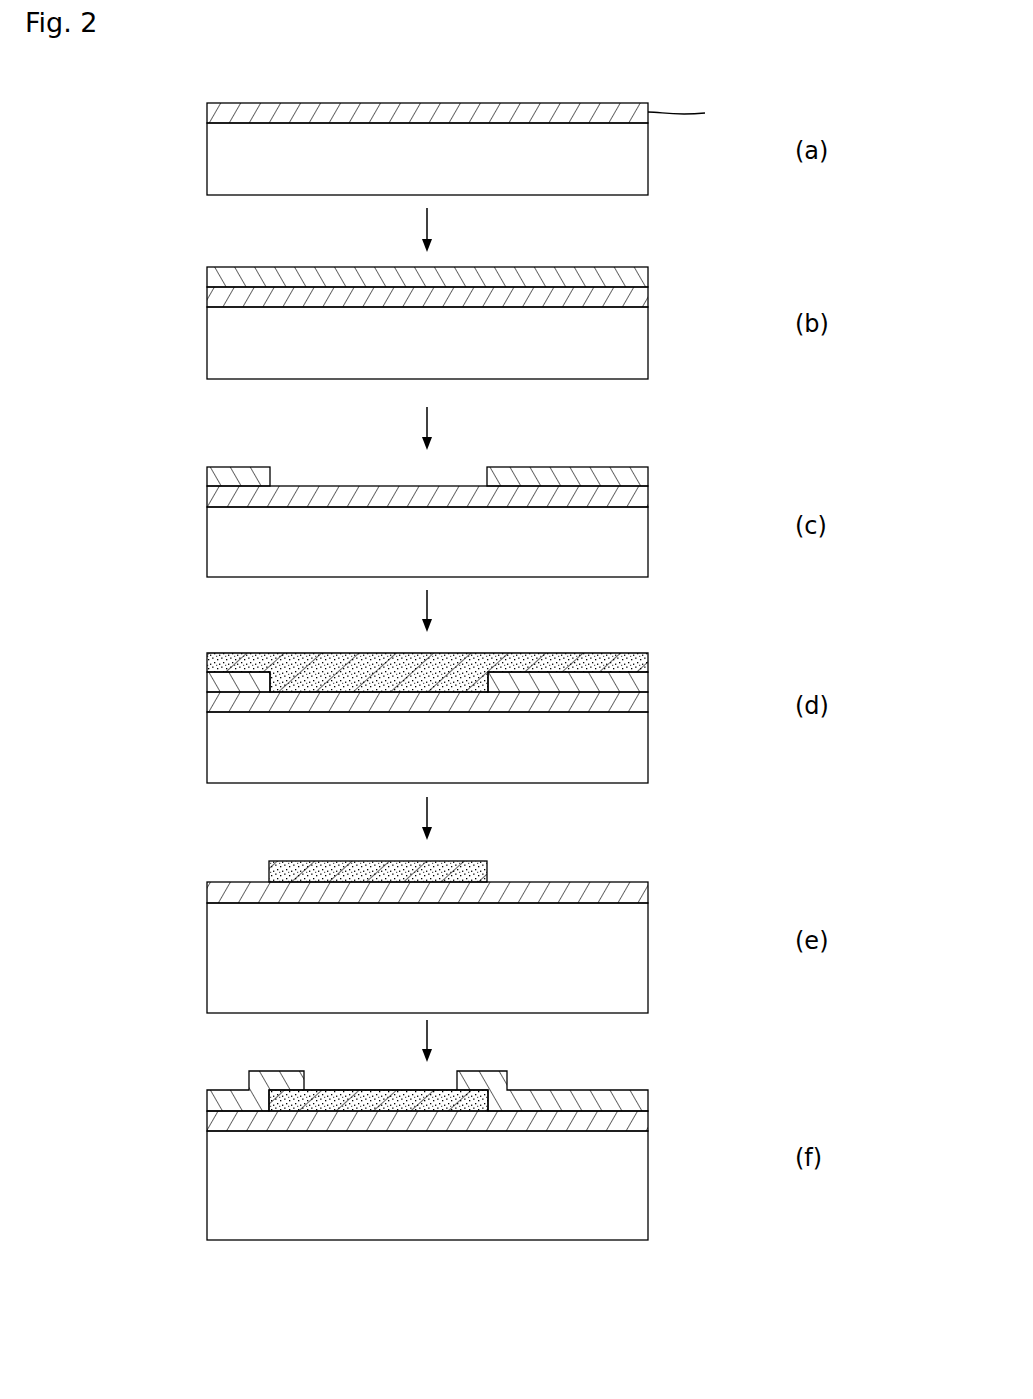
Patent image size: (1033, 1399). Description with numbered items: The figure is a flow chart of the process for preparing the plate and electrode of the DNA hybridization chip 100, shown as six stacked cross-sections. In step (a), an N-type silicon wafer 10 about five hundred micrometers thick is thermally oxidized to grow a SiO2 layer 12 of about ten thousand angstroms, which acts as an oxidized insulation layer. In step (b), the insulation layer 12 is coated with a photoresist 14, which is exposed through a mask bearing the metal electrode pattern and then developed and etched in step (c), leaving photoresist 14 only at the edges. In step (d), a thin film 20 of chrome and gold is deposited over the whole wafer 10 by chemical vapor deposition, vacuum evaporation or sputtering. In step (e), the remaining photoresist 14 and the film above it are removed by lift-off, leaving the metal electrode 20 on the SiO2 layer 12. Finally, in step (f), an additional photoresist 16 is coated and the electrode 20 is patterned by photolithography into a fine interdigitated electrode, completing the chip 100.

The silicon wafer 10 is at (207, 162).
The SiO2 layer 12 is at (207, 117).
The photoresist 14 is at (207, 278).
The photoresist AZ4620 16 is at (215, 1090).
The metal electrode 20 is at (207, 665).
The DNA hybridization chip 100 is at (684, 1098).